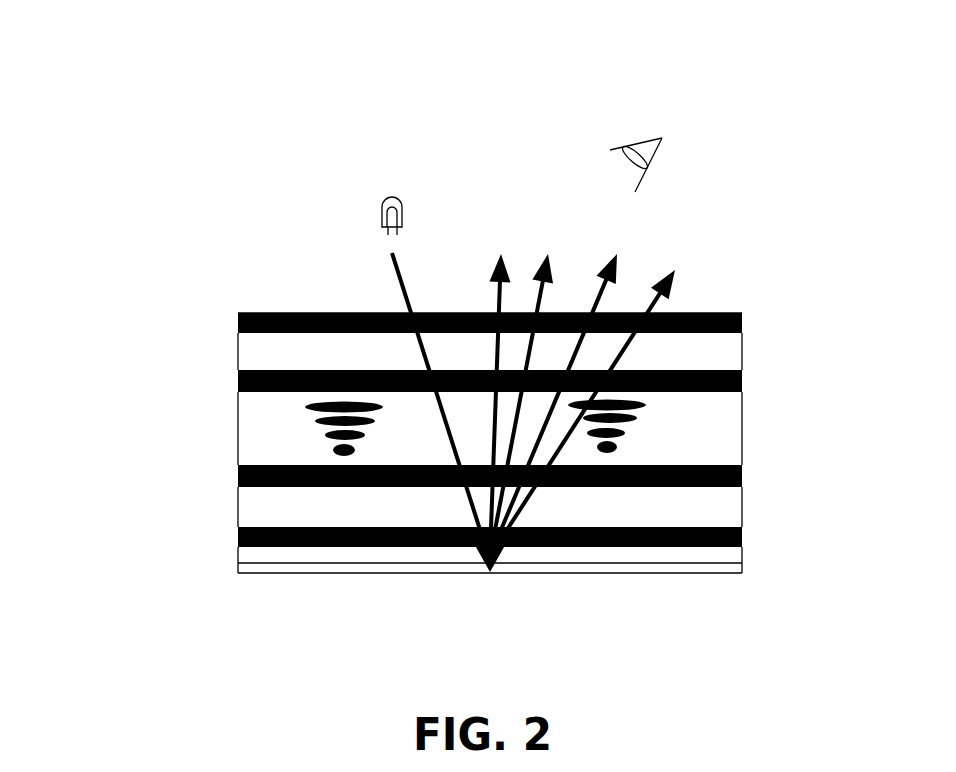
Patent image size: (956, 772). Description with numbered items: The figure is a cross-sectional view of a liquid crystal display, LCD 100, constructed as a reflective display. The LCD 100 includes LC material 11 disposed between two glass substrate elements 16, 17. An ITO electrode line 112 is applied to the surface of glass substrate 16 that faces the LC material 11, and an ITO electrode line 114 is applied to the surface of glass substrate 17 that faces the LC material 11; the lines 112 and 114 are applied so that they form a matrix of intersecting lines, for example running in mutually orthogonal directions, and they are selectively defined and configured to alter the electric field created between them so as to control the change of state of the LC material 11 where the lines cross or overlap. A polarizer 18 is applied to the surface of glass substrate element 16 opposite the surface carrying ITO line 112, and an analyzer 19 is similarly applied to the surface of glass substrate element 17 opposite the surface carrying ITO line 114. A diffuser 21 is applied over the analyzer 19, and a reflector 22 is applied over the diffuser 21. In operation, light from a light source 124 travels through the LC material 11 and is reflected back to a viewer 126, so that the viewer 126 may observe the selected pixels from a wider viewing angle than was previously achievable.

The LCD 100 is at (122, 41).
The polarizer 18 is at (238, 323).
The glass substrate element 16 is at (742, 348).
The ITO electrode line 112 is at (238, 382).
The LC material 11 is at (238, 431).
The ITO electrode line 114 is at (238, 478).
The glass substrate element 17 is at (742, 502).
The analyzer 19 is at (238, 534).
The diffuser 21 is at (742, 550).
The reflector 22 is at (745, 564).
The light source 124 is at (382, 205).
The viewer 126 is at (655, 152).